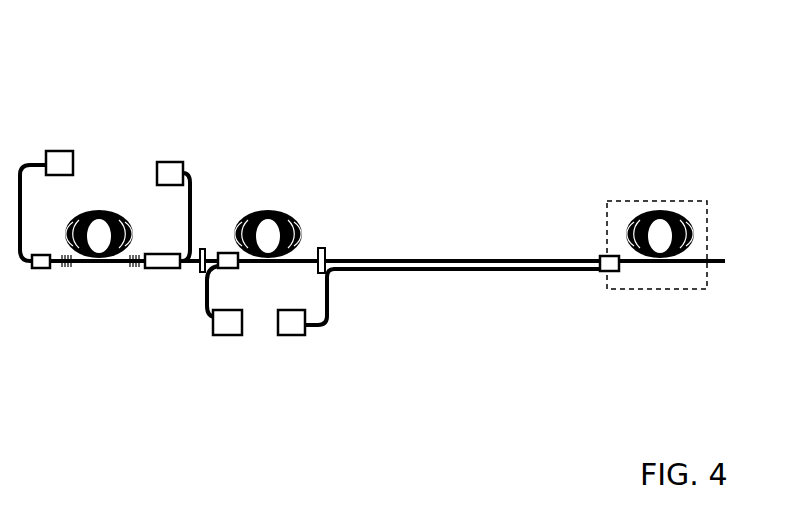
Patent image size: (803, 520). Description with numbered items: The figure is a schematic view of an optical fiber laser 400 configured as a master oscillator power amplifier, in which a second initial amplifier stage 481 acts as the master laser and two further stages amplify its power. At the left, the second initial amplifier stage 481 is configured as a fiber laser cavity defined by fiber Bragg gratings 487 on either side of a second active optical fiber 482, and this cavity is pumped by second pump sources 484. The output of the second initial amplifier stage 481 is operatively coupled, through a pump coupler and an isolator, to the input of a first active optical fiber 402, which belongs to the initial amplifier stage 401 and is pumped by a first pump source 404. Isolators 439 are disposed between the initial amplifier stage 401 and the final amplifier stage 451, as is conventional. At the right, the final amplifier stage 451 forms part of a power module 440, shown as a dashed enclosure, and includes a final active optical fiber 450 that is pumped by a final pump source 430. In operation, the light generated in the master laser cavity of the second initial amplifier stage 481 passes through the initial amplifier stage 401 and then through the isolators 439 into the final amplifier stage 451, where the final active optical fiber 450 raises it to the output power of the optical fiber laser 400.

The optical fiber laser 400 is at (593, 70).
The second initial amplifier stage 481 is at (103, 110).
The second pump sources 484 is at (161, 169).
The second active optical fiber 482 is at (113, 211).
The fiber Bragg gratings 487 is at (133, 268).
The initial amplifier stage 401 is at (257, 188).
The first active optical fiber 402 is at (293, 213).
The isolators 439 is at (198, 273).
The first pump source 404 is at (225, 325).
The final pump source 430 is at (288, 337).
The final amplifier stage 451 is at (642, 188).
The final active optical fiber 450 is at (690, 222).
The power module 440 is at (628, 288).